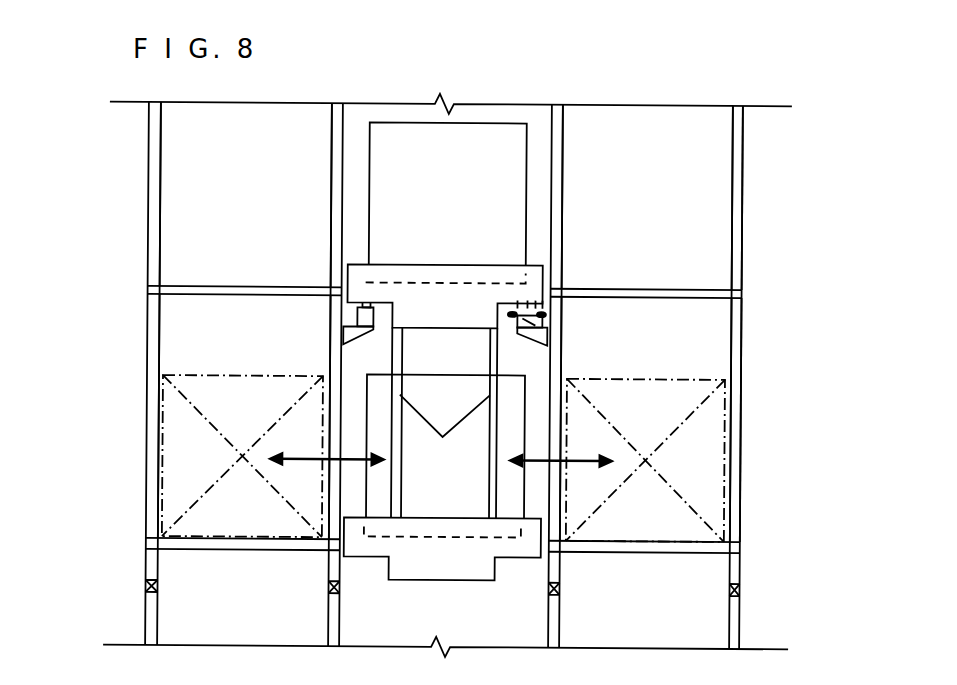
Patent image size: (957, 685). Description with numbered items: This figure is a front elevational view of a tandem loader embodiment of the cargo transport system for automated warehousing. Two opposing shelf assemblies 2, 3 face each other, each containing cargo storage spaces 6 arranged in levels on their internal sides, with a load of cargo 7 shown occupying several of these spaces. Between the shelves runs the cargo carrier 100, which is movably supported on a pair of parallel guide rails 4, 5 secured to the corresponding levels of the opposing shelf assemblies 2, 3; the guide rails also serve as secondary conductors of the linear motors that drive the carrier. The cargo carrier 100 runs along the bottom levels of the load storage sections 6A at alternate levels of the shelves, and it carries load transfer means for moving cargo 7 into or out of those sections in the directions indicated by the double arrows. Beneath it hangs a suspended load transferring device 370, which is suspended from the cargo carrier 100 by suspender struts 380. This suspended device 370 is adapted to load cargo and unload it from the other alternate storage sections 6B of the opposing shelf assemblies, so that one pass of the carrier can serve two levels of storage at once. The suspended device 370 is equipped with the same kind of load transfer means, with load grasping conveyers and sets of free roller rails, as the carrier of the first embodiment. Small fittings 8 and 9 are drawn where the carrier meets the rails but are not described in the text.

The shelf assembly 2 is at (752, 178).
The shelf assembly 3 is at (146, 235).
The guide rail 4 is at (548, 333).
The guide rail 5 is at (357, 319).
The cargo storage space 6 is at (183, 338).
The load storage section 6A is at (745, 225).
The alternate storage section 6B is at (745, 430).
The load of cargo 7 is at (385, 189).
The guide 8 is at (360, 302).
The bolt 9 is at (517, 314).
The cargo carrier 100 is at (447, 268).
The suspended load transferring device 370 is at (432, 568).
The suspender strut 380 is at (444, 423).